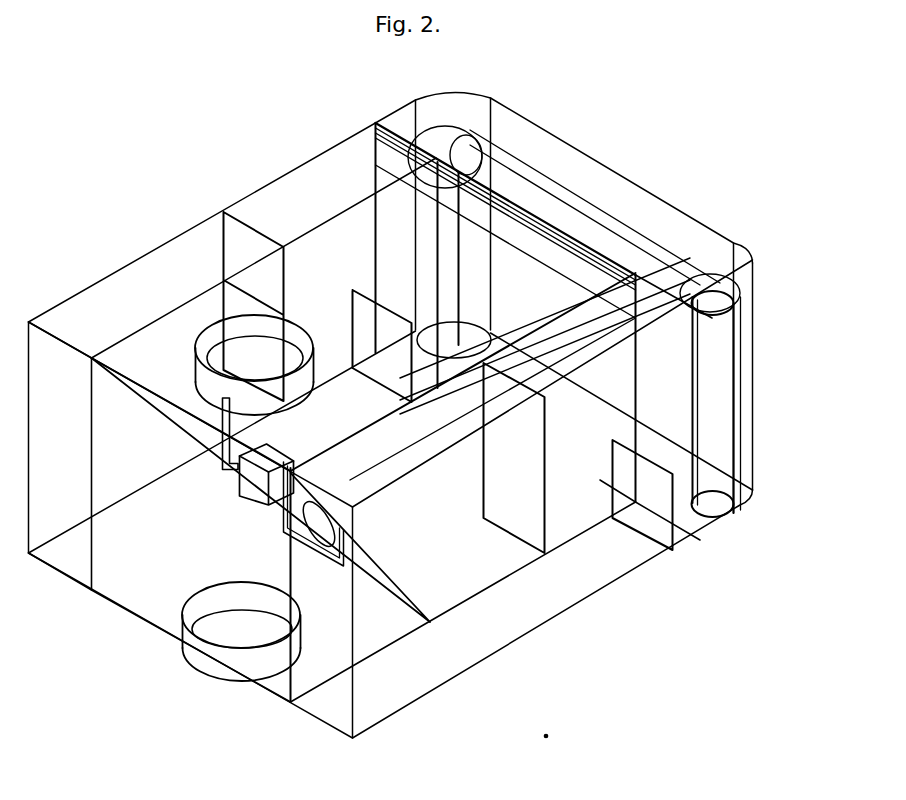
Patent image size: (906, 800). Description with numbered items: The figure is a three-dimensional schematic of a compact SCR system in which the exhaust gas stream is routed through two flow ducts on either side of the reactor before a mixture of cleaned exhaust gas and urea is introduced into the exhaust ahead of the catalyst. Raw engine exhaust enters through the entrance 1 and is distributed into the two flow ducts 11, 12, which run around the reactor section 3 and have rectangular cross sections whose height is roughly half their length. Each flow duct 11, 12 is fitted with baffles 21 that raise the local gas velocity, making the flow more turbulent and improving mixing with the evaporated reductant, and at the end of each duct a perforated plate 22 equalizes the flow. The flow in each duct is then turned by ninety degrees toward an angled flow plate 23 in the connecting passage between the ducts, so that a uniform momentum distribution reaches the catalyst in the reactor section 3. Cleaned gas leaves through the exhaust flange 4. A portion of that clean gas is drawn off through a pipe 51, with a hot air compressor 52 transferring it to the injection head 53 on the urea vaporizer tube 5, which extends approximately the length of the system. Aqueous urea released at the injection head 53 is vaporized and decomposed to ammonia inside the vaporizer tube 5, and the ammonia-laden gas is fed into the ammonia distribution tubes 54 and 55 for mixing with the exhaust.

The entrance 1 is at (236, 637).
The reactor section 3 is at (363, 443).
The exhaust flange 4 is at (215, 340).
The urea vaporizer tube 5 is at (430, 472).
The flow duct 11 is at (391, 415).
The flow duct 12 is at (60, 456).
The baffles 21 is at (578, 458).
The perforated plate 22 is at (682, 510).
The angled flow plate 23 is at (583, 328).
The pipe 51 is at (222, 472).
The hot air compressor 52 is at (255, 480).
The injection head 53 is at (318, 528).
The ammonia distribution tube 54 is at (720, 412).
The ammonia distribution tube 55 is at (427, 257).